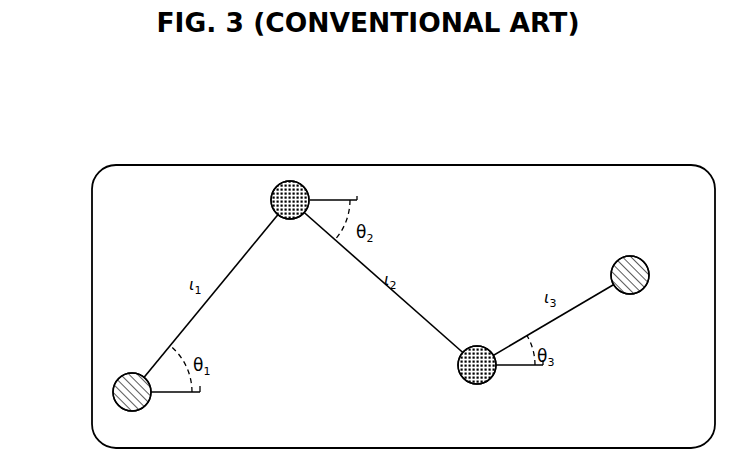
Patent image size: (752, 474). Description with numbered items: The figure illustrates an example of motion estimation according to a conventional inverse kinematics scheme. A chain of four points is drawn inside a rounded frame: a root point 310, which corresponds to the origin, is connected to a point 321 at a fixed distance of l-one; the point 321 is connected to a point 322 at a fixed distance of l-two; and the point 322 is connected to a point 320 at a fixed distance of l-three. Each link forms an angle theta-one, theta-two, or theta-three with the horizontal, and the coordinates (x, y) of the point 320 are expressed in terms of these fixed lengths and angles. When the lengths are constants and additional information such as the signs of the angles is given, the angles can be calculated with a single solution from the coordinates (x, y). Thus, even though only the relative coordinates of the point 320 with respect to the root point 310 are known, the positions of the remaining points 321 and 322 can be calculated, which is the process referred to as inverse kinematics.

The root point 310 is at (128, 374).
The point 321 is at (290, 181).
The point 322 is at (477, 346).
The point 320 is at (630, 256).